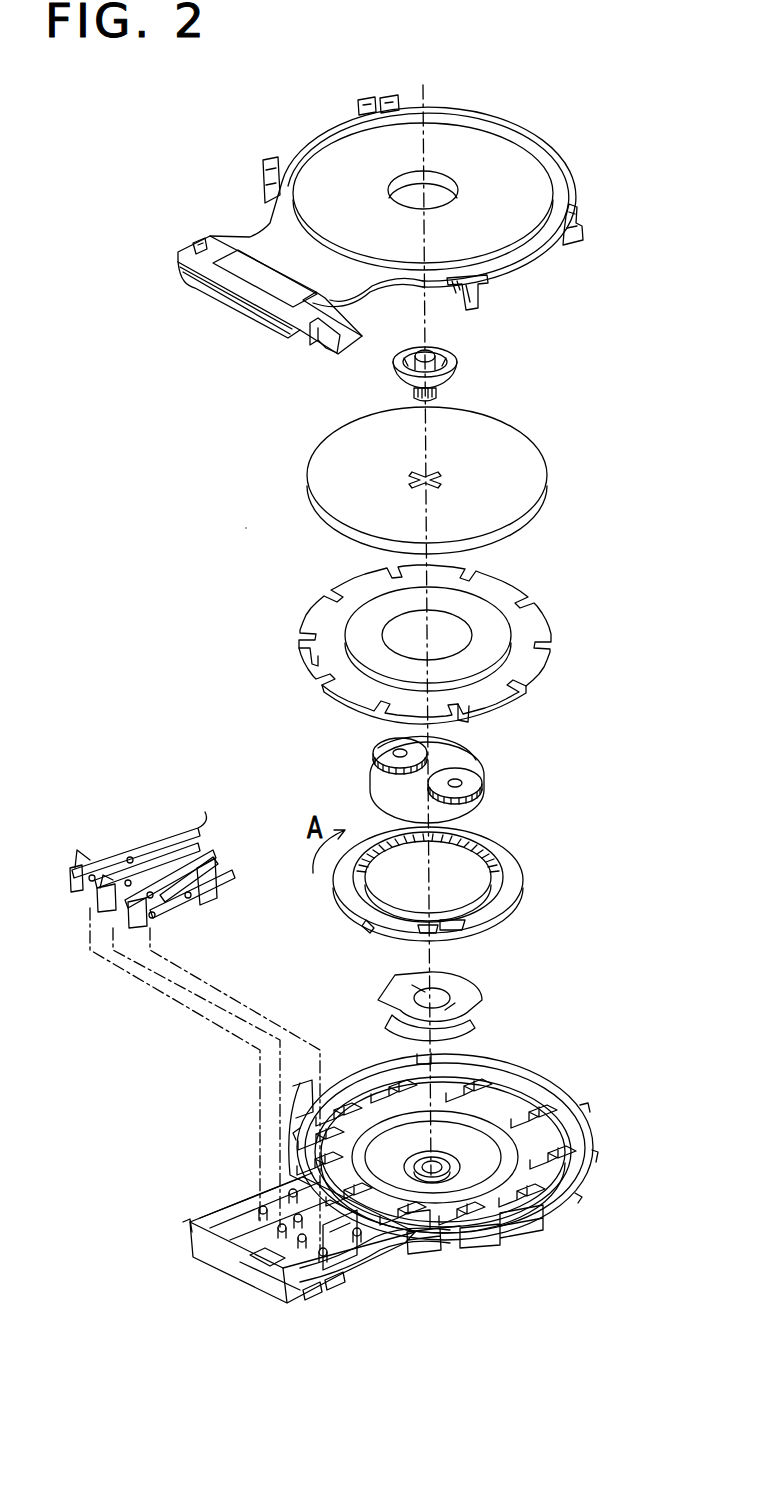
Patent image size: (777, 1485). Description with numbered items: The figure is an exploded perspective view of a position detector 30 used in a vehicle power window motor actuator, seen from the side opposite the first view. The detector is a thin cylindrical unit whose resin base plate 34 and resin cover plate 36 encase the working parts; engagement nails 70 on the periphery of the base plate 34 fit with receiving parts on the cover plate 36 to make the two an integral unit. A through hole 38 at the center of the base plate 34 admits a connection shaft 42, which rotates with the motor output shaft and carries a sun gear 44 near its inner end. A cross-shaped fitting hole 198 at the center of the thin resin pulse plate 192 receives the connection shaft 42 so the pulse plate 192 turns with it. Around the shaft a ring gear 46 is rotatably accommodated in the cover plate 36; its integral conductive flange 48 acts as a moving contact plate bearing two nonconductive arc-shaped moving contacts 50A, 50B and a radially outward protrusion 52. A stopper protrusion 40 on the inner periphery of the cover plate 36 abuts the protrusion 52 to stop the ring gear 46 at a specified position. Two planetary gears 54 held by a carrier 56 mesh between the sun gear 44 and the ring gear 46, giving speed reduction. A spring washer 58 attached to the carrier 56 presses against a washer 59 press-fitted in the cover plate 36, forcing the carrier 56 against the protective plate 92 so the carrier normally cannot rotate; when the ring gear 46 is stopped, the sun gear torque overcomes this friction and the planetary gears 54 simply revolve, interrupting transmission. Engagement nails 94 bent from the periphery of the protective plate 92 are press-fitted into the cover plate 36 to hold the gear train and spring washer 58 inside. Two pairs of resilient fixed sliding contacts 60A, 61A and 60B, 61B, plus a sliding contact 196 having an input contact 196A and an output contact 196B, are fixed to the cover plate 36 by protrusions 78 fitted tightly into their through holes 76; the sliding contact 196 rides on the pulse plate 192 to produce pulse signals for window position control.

The position detector 30 is at (245, 527).
The base plate 34 is at (563, 160).
The cover plate 36 is at (550, 1225).
The through hole 38 is at (450, 197).
The stopper protrusion 40 is at (299, 1238).
The connection shaft 42 is at (458, 358).
The sun gear 44 is at (440, 392).
The ring gear 46 is at (500, 866).
The flange 48 is at (512, 885).
The moving contact 50A is at (440, 932).
The moving contact 50B is at (465, 925).
The protrusion 52 is at (370, 932).
The planetary gears 54 is at (385, 752).
The carrier 56 is at (478, 768).
The spring washer 58 is at (482, 1000).
The washer 59 is at (445, 1195).
The fixed sliding contact 60A is at (222, 868).
The fixed sliding contact 60B is at (233, 853).
The fixed sliding contact 61A is at (203, 830).
The fixed sliding contact 61B is at (180, 833).
The engagement nails 70 is at (475, 309).
The through holes 76 is at (110, 872).
The protrusions 78 is at (262, 1208).
The protective plate 92 is at (520, 600).
The engagement nails 94 is at (310, 652).
The pulse plate 192 is at (547, 470).
The sliding contact 196 is at (212, 810).
The input contact 196A is at (207, 870).
The output contact 196B is at (213, 840).
The fitting hole 198 is at (445, 478).